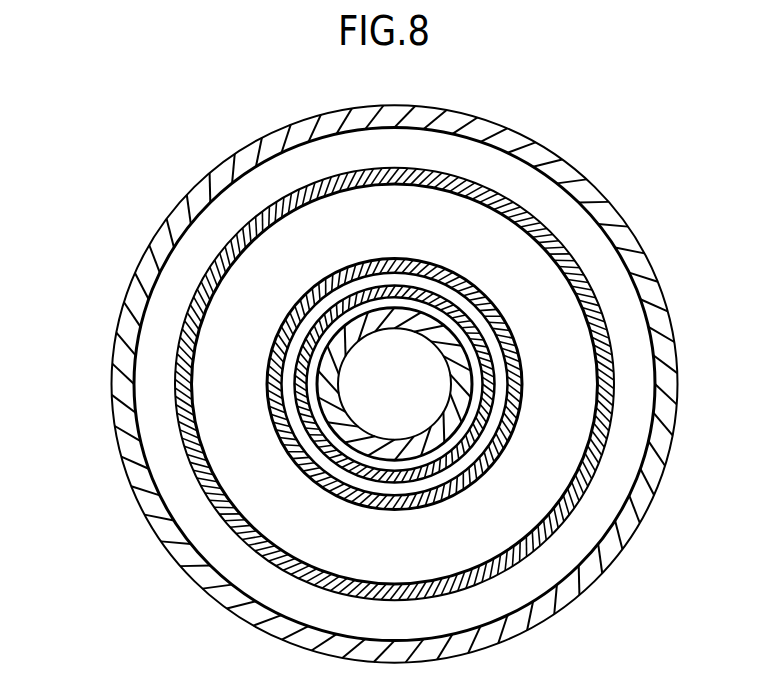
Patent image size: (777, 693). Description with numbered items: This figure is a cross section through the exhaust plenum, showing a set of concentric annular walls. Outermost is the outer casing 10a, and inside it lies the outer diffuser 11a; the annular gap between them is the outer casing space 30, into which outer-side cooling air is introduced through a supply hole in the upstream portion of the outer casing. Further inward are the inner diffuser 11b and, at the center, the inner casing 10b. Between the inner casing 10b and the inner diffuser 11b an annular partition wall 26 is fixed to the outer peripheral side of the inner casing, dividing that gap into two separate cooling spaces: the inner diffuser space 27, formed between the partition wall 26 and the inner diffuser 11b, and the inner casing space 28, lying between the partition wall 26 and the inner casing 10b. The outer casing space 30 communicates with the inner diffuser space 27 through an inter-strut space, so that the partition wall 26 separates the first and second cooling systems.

The outer casing 10a is at (633, 230).
The inner casing 10b is at (333, 442).
The outer diffuser 11a is at (605, 323).
The inner diffuser 11b is at (277, 330).
The partition wall 26 is at (295, 383).
The inner diffuser space 27 is at (340, 297).
The inner casing space 28 is at (322, 431).
The outer casing space 30 is at (556, 213).